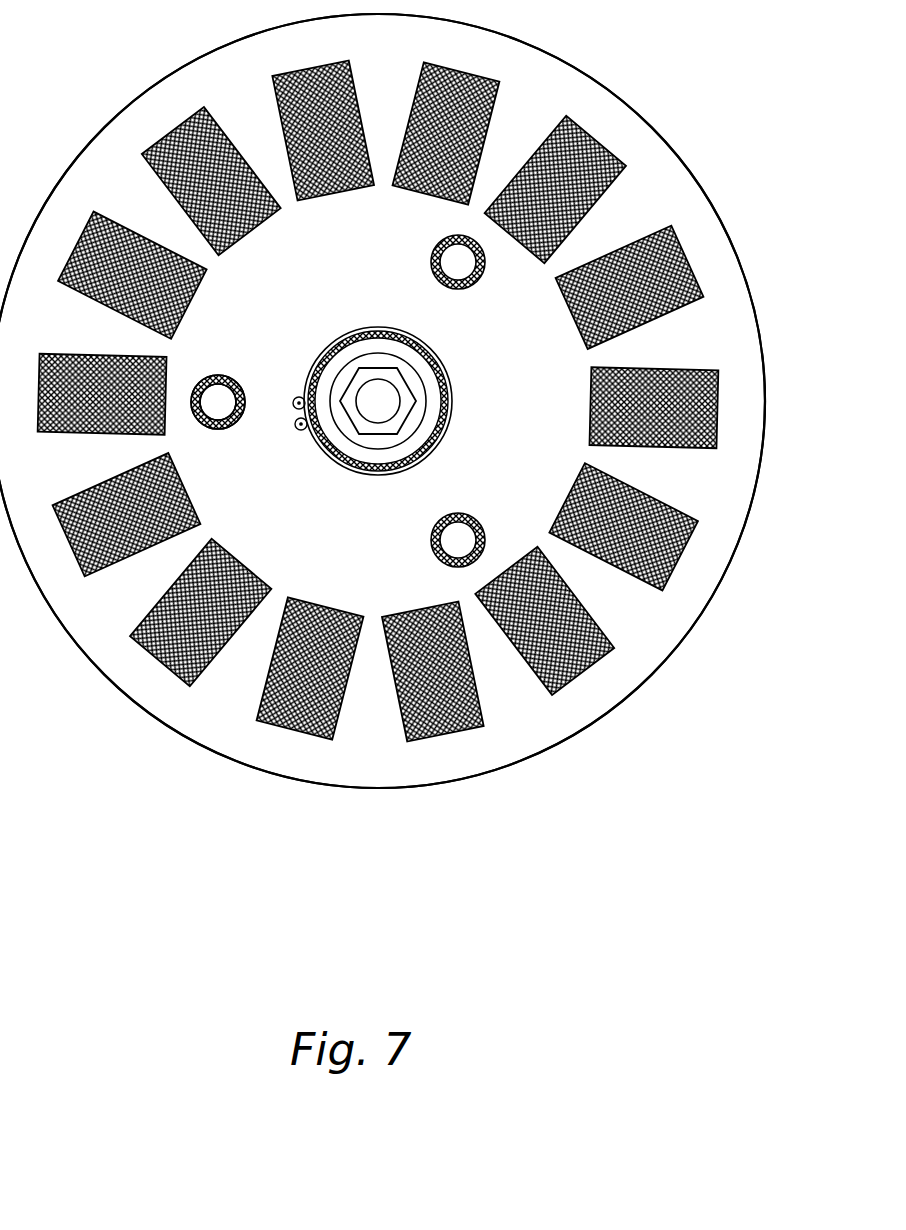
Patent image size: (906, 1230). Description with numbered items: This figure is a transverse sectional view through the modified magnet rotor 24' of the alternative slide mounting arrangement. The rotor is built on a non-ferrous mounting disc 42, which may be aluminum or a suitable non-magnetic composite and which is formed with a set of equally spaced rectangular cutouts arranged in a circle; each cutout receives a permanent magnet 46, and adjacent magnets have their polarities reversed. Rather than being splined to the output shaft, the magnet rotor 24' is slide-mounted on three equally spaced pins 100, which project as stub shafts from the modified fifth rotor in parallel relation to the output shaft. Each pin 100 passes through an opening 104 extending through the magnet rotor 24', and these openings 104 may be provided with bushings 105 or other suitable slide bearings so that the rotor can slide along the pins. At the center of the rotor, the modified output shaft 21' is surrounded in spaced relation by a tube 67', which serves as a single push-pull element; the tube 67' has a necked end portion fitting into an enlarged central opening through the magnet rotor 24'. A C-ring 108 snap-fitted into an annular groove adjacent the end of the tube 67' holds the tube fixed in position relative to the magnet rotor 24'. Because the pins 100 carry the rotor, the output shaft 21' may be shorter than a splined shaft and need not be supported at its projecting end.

The modified magnet rotor 24' is at (382, 401).
The non-ferrous mounting disc 42 is at (166, 705).
The permanent magnet 46 is at (156, 187).
The pin 100 is at (226, 408).
The opening 104 is at (217, 430).
The bushing 105 is at (220, 375).
The C-ring 108 is at (354, 328).
The tube 67' is at (421, 383).
The modified output shaft 21' is at (424, 410).